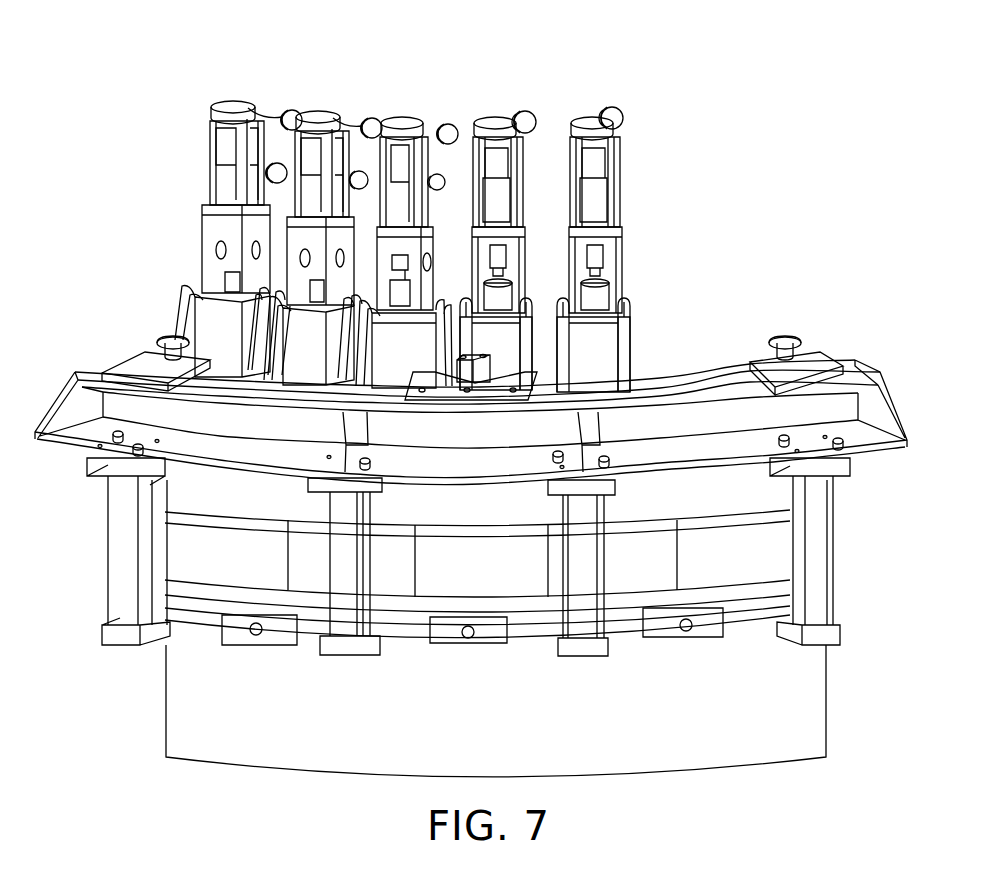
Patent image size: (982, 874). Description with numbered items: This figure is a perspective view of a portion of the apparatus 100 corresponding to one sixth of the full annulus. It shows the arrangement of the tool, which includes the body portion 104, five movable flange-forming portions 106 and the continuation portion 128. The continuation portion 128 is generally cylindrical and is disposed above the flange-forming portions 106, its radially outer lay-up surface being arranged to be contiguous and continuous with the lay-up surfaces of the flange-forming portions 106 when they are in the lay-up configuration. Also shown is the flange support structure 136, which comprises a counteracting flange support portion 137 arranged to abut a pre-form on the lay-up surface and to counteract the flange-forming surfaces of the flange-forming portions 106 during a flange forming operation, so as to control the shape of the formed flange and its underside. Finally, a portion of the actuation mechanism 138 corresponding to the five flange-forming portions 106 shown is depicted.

The apparatus 100 is at (802, 198).
The body portion 104 is at (818, 712).
The flange-forming portions 106 is at (180, 545).
The continuation portion 128 is at (180, 493).
The flange support structure 136 is at (880, 507).
The counteracting flange support portion 137 is at (165, 588).
The actuation mechanism 138 is at (616, 88).